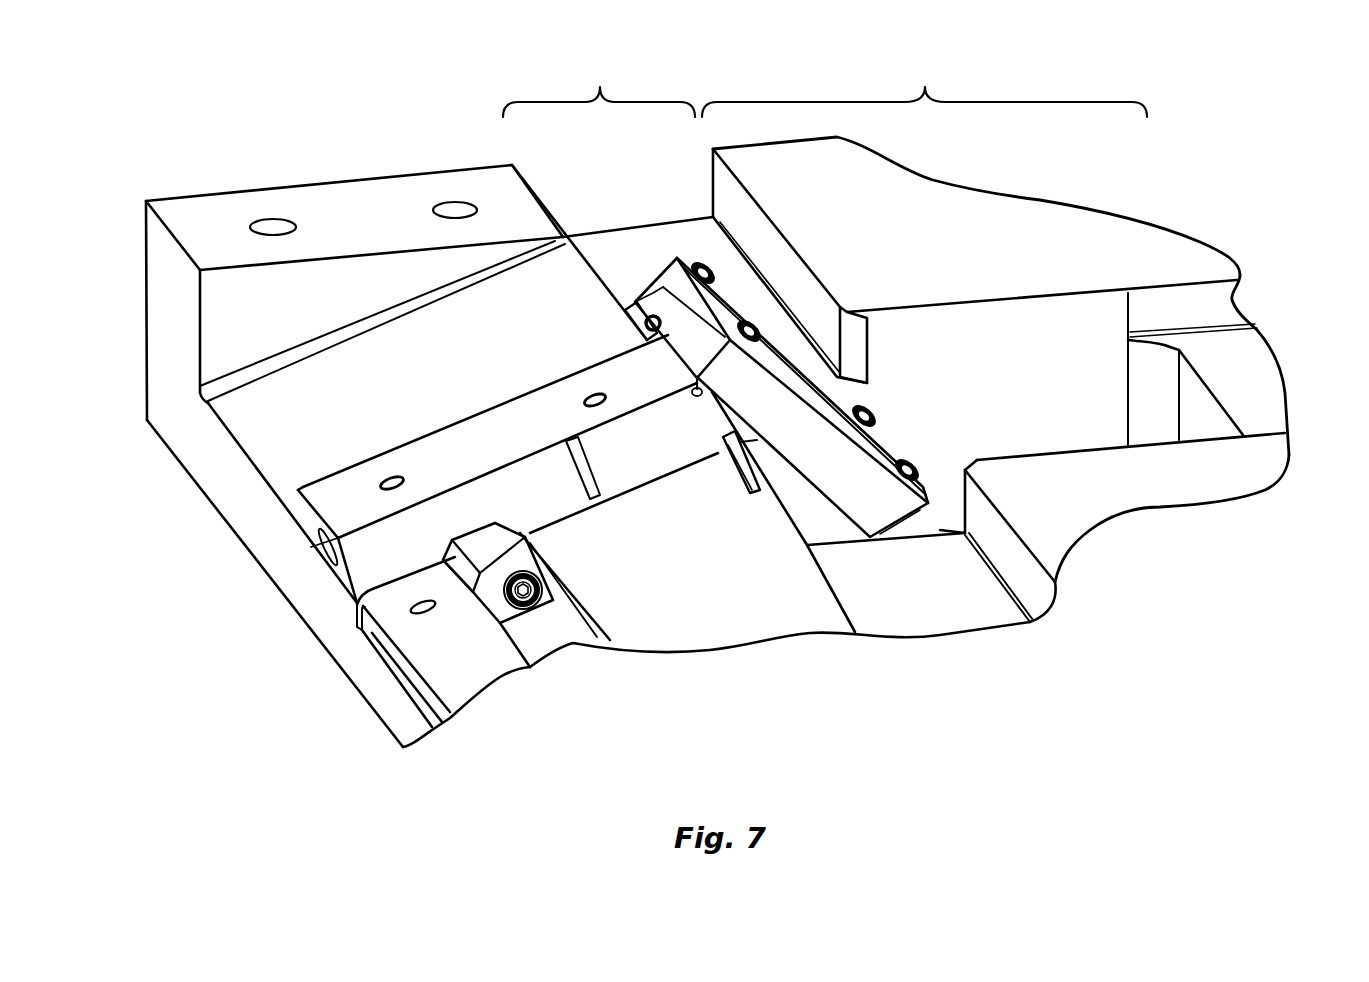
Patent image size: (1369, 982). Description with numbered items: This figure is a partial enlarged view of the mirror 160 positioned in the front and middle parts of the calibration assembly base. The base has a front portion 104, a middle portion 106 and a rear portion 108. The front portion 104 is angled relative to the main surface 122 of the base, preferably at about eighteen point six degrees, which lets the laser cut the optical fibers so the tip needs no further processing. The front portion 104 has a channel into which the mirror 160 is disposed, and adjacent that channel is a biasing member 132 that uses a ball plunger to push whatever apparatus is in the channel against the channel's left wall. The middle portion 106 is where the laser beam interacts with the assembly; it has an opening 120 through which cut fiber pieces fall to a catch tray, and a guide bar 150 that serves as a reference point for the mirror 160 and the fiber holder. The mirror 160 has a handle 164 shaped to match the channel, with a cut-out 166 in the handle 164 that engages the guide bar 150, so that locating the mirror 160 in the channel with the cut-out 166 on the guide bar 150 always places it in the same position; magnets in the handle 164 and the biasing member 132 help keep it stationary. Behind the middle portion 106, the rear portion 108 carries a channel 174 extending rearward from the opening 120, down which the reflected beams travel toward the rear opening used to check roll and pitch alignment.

The front portion 104 is at (708, 424).
The middle portion 106 is at (599, 88).
The rear portion 108 is at (924, 88).
The opening 120 is at (1040, 330).
The main surface 122 is at (395, 197).
The biasing member 132 is at (418, 638).
The guide bar 150 is at (767, 488).
The mirror 160 is at (672, 258).
The handle 164 is at (415, 460).
The cut-out 166 is at (720, 434).
The channel 174 is at (1267, 387).